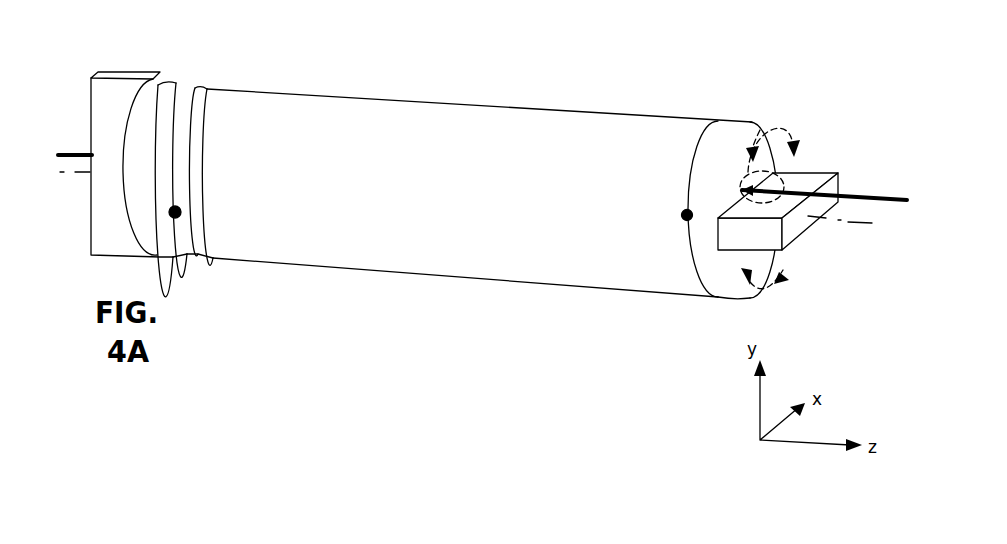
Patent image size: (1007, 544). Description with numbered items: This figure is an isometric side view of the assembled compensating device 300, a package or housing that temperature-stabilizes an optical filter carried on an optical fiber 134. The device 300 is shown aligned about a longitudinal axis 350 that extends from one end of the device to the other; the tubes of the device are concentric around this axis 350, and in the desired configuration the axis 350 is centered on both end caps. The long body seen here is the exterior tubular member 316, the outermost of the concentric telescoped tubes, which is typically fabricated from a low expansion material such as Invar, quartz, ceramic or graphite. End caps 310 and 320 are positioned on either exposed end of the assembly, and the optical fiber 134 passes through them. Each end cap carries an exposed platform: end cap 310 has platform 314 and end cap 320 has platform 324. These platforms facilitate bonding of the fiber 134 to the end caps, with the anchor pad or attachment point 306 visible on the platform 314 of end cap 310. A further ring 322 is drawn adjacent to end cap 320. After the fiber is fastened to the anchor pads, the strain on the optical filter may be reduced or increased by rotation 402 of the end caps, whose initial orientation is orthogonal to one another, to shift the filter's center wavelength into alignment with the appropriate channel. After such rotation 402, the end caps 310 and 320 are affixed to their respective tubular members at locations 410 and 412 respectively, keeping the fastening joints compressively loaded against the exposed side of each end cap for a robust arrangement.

The optical fiber 134 is at (89, 153).
The compensating device 300 is at (706, 58).
The attachment point 306 is at (775, 174).
The end cap 310 is at (723, 132).
The exposed platform 314 is at (733, 252).
The exterior tubular member 316 is at (457, 113).
The end cap 320 is at (157, 93).
The ring 322 is at (186, 106).
The exposed platform 324 is at (138, 70).
The longitudinal axis 350 is at (856, 222).
The rotation 402 is at (786, 122).
The affixing location 410 is at (675, 218).
The affixing location 412 is at (174, 234).